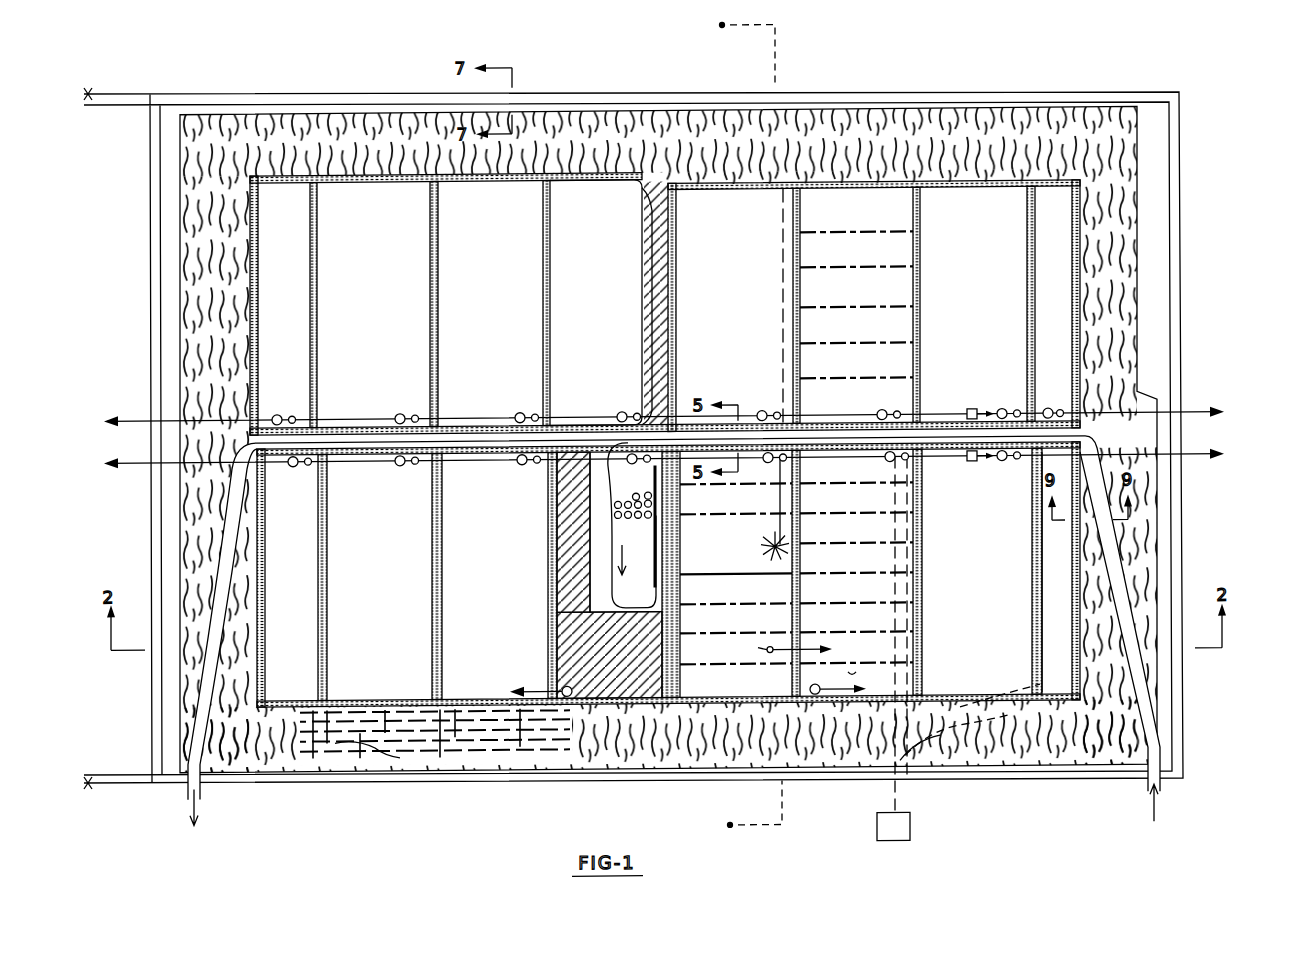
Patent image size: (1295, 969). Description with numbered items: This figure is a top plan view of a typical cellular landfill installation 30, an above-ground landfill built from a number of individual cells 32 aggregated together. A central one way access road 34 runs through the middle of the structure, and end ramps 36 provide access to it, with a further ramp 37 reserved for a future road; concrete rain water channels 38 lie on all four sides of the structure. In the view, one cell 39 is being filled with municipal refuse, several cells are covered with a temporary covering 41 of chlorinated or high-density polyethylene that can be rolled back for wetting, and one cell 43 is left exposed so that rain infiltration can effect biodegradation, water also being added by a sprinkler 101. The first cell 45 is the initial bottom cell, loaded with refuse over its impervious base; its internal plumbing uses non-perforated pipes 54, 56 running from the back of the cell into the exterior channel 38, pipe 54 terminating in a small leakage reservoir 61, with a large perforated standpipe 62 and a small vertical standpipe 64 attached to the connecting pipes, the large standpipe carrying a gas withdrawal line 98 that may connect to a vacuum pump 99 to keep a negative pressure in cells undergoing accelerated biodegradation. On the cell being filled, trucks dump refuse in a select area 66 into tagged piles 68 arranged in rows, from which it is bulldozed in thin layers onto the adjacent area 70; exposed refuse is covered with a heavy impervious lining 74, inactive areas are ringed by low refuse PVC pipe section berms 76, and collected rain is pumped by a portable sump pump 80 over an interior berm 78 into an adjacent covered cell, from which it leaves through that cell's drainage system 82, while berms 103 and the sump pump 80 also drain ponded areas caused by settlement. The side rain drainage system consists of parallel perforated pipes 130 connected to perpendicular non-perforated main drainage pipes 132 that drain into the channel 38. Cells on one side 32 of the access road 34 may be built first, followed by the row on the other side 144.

The landfill installation 30 is at (998, 130).
The cells 32 is at (957, 221).
The central one way access road 34 is at (828, 445).
The end ramps 36 is at (1107, 555).
The future road ramp 37 is at (937, 764).
The concrete rain water channels 38 is at (1178, 562).
The cell being filled 39 is at (575, 581).
The temporary covering 41 is at (832, 261).
The exposed cell 43 is at (708, 343).
The first cell 45 is at (1053, 680).
The non-perforated pipe 54 is at (893, 569).
The non-perforated pipe 56 is at (905, 547).
The leakage reservoir 61 is at (878, 832).
The large perforated standpipe 62 is at (517, 416).
The small vertical standpipe 64 is at (532, 418).
The select area 66 is at (655, 501).
The piles 68 is at (652, 519).
The area adjacent to the piles 70 is at (615, 552).
The heavy impervious lining 74 is at (628, 672).
The refuse PVC pipe section berms 76 is at (560, 616).
The interior berm 78 is at (547, 642).
The portable sump pump 80 is at (557, 693).
The drainage system 82 is at (530, 466).
The gas withdrawal line 98 is at (133, 421).
The vacuum pump 99 is at (973, 414).
The sprinkler 101 is at (780, 550).
The berms 103 is at (742, 580).
The parallel perforated pipes 130 is at (348, 775).
The main drainage pipes 132 is at (447, 780).
The other side of the access road 144 is at (857, 677).